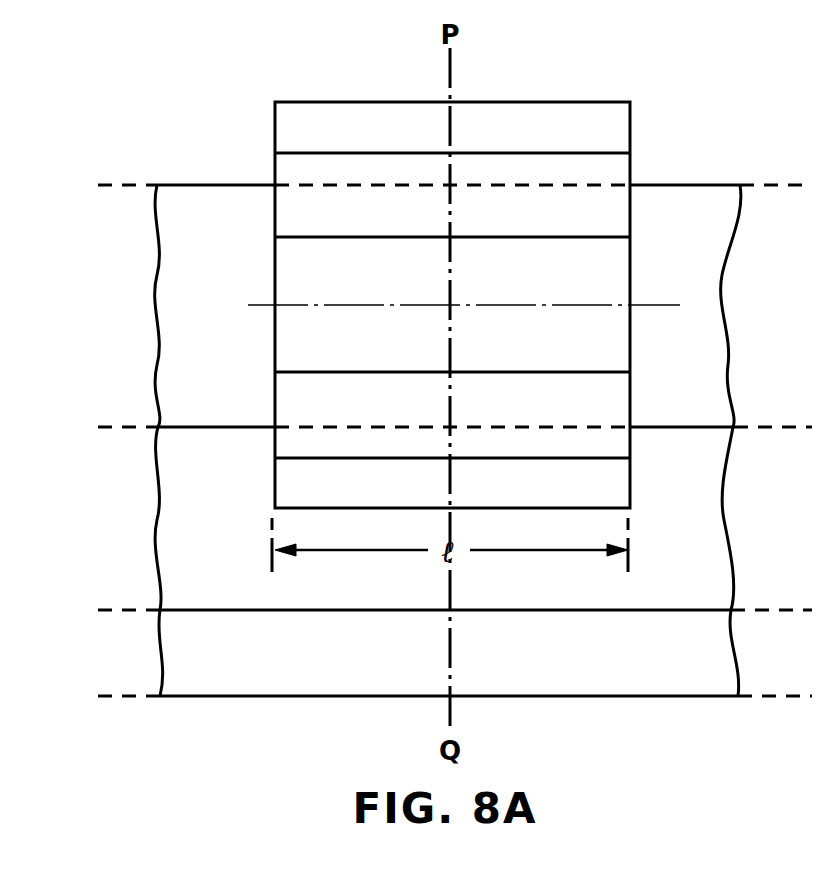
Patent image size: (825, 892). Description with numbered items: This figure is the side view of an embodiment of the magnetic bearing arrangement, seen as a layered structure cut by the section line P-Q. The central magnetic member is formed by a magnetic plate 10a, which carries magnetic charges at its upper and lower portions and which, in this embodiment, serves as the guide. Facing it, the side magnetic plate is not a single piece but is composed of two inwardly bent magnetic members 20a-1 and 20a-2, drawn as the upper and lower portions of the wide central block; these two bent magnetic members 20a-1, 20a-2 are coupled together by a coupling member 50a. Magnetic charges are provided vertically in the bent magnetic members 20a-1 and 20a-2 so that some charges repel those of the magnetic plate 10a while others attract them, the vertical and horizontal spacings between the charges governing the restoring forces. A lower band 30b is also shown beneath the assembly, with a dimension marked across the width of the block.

The magnetic plate 10a is at (178, 366).
The bent magnetic member 20a-1 is at (288, 122).
The bent magnetic member 20a-2 is at (287, 478).
The lower electrode band 30b is at (183, 663).
The coupling member 50a is at (282, 270).